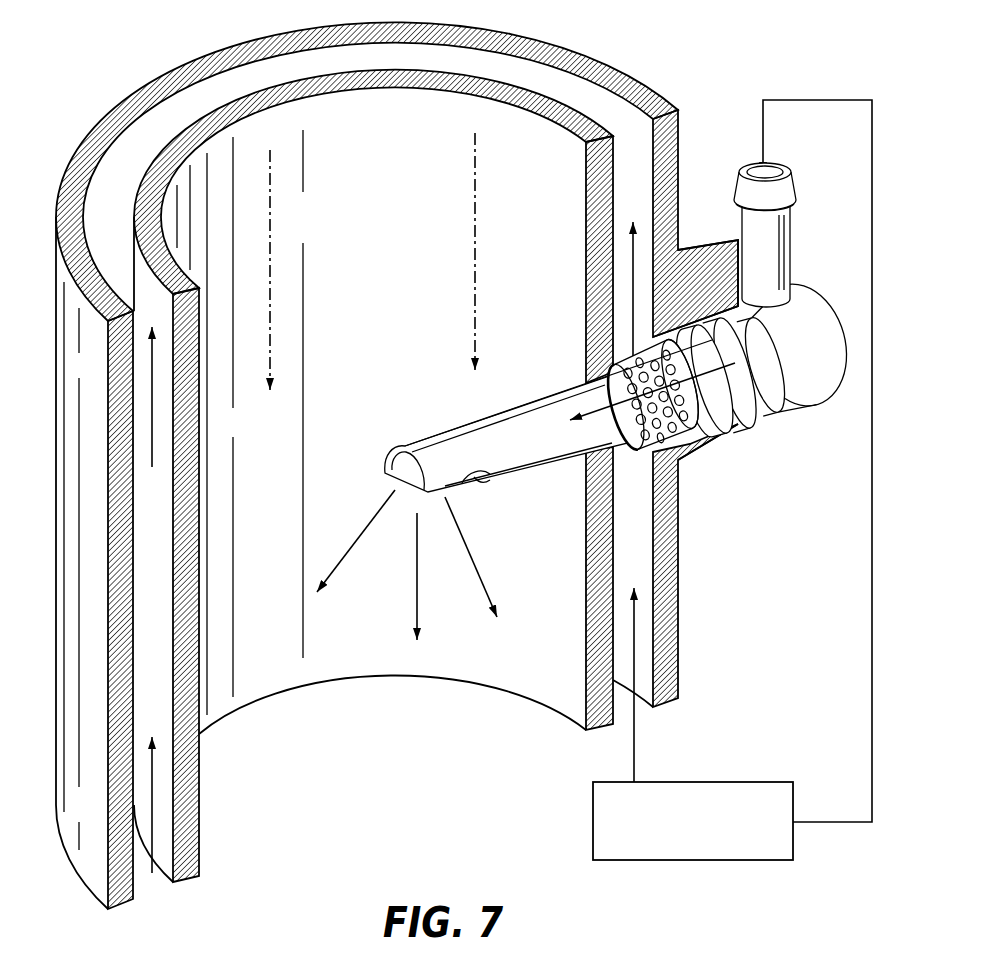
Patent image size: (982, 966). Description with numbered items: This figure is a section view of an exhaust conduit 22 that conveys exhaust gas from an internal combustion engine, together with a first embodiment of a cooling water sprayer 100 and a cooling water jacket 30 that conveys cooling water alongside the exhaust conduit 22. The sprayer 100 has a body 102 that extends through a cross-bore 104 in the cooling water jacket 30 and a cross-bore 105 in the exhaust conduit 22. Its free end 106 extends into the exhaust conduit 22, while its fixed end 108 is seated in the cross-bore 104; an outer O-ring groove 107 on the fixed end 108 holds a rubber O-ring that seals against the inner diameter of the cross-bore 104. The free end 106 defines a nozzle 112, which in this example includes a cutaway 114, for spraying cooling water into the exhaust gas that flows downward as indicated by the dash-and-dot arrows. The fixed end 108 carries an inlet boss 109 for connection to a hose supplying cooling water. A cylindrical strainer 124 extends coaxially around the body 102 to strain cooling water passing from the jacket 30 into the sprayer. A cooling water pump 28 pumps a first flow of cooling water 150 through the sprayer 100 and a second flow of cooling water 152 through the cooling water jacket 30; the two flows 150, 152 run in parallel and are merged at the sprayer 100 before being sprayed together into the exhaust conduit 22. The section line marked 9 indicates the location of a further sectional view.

The cooling water jacket 30 is at (605, 66).
The exhaust conduit 22 is at (186, 862).
The cooling water pump 28 is at (727, 860).
The first flow of cooling water 150 is at (872, 578).
The second flow of cooling water 152 is at (636, 737).
The cooling water sprayer 100 is at (636, 340).
The body 102 is at (800, 403).
The cross-bore 104 is at (728, 433).
The cross-bore 105 is at (603, 370).
The free end 106 is at (370, 440).
The outer O-ring groove 107 is at (737, 363).
The fixed end 108 is at (712, 313).
The inlet boss 109 is at (809, 182).
The nozzle 112 is at (473, 502).
The cutaway 114 is at (447, 478).
The strainer 124 is at (653, 443).
The section line 9 is at (383, 488).